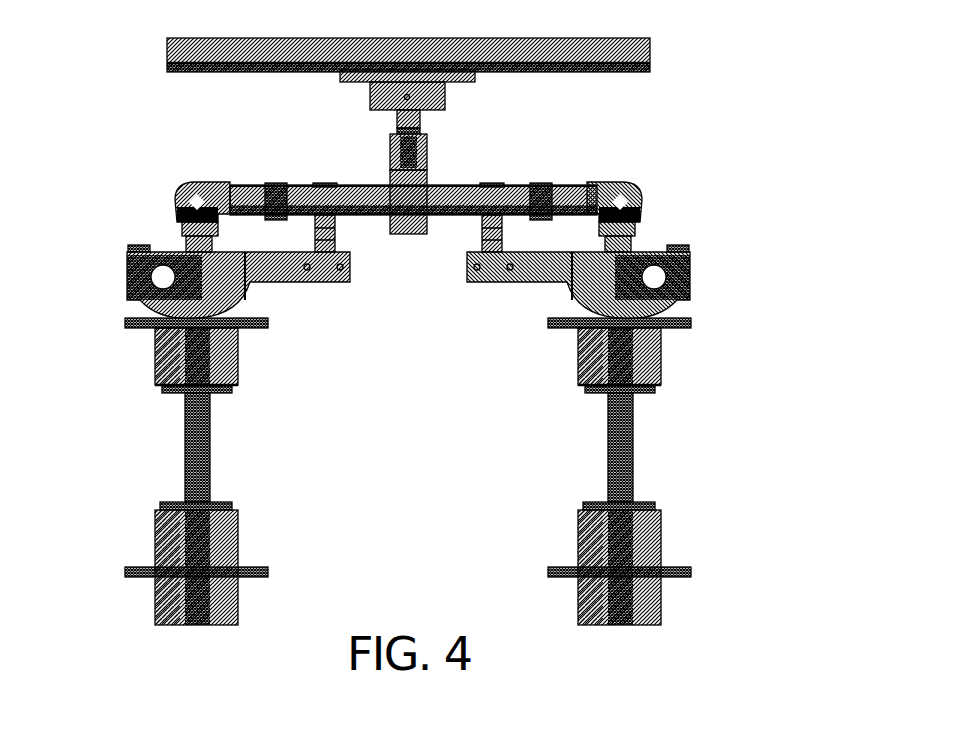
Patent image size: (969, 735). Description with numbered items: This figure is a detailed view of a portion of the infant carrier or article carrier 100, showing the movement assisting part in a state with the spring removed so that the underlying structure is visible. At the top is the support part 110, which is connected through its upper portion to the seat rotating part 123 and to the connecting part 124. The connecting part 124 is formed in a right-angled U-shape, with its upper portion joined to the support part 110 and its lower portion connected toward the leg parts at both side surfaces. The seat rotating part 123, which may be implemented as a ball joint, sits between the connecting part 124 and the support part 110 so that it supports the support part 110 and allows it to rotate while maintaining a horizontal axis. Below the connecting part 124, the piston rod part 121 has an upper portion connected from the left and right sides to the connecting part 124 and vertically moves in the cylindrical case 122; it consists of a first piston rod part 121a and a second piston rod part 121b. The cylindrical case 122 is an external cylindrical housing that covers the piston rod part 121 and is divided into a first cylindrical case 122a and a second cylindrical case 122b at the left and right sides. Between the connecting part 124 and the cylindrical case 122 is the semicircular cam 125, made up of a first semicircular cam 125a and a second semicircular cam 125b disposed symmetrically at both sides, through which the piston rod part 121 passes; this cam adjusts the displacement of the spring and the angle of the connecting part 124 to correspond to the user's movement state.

The infant carrier or article carrier 100 is at (435, 29).
The support part 110 is at (650, 51).
The piston rod part 121 is at (456, 509).
The first piston rod part 121a is at (210, 456).
The second piston rod part 121b is at (606, 483).
The cylindrical case 122 is at (454, 351).
The first cylindrical case 122a is at (270, 313).
The second cylindrical case 122b is at (545, 324).
The seat rotating part 123 is at (432, 150).
The connecting part 124 is at (648, 190).
The semicircular cam 125 is at (424, 285).
The first semicircular cam 125a is at (127, 282).
The second semicircular cam 125b is at (470, 266).